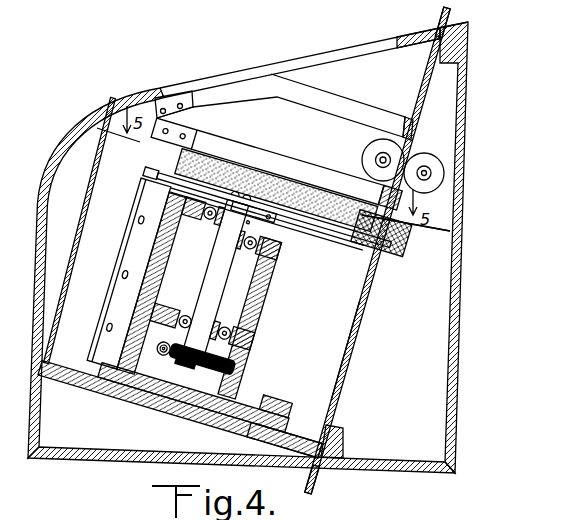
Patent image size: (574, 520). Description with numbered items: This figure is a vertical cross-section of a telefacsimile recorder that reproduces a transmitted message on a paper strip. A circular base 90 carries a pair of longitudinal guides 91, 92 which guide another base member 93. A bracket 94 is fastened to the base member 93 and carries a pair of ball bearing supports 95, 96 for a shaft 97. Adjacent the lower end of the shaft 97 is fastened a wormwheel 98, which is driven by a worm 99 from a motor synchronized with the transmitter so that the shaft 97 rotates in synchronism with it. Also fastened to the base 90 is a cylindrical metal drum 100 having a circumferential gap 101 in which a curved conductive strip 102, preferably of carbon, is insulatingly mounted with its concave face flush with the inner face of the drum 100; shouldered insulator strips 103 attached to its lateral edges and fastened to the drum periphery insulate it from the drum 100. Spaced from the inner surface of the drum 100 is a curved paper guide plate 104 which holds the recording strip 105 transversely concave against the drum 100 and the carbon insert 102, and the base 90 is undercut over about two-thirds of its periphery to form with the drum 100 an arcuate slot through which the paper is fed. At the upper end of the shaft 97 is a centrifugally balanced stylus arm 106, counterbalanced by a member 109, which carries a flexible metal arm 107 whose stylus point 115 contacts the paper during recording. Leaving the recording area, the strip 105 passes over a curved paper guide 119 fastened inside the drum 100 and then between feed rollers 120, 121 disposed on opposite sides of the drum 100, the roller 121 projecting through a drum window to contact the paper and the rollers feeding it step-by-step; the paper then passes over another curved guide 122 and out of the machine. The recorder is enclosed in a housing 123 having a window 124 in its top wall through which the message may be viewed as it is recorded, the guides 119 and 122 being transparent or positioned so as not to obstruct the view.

The circular base 90 is at (59, 376).
The longitudinal guide 91 is at (96, 362).
The longitudinal guide 92 is at (280, 411).
The base member 93 is at (149, 384).
The bracket 94 is at (163, 250).
The ball bearing support 95 is at (187, 316).
The ball bearing support 96 is at (208, 215).
The shaft 97 is at (222, 276).
The wormwheel 98 is at (228, 370).
The worm 99 is at (156, 352).
The cylindrical metal drum 100 is at (361, 344).
The circumferential gap 101 is at (277, 443).
The curved conductive strip 102 is at (182, 165).
The shouldered insulator strip 103 is at (383, 205).
The curved paper guide plate 104 is at (345, 355).
The recording strip 105 is at (453, 10).
The stylus arm 106 is at (300, 223).
The flexible metal arm 107 is at (258, 208).
The counterbalance member 109 is at (150, 174).
The stylus point 115 is at (380, 214).
The curved paper guide 119 is at (270, 163).
The feed roller 120 is at (366, 149).
The feed roller 121 is at (431, 161).
The curved guide 122 is at (321, 98).
The housing 123 is at (455, 332).
The window 124 is at (357, 47).